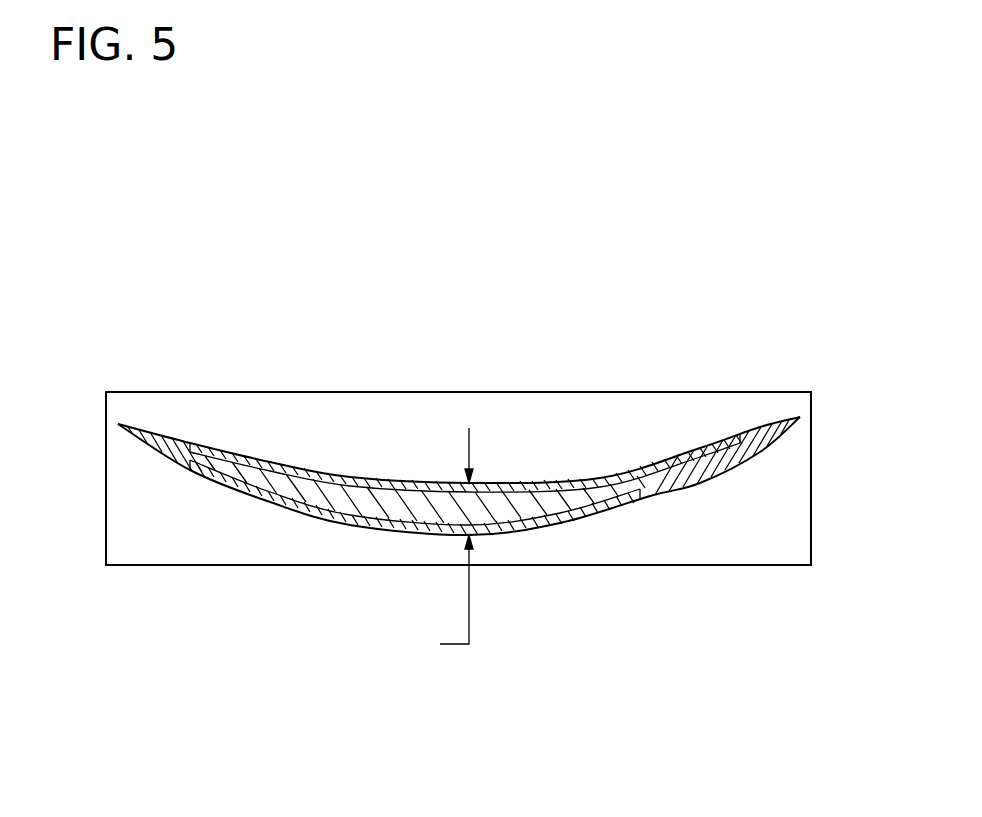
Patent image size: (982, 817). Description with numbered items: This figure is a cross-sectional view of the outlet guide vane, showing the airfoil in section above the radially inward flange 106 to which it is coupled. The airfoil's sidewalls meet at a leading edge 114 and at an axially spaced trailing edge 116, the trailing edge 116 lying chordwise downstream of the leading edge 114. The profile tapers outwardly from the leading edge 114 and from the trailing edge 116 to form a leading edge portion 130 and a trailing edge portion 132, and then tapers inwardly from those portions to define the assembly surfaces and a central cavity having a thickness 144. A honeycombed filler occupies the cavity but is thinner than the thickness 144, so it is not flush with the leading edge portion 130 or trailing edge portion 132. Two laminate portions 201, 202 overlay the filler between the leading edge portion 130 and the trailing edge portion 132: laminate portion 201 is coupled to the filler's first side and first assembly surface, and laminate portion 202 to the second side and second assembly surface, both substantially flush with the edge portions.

The radially inward flange 106 is at (200, 565).
The leading edge 114 is at (118, 424).
The trailing edge 116 is at (800, 417).
The leading edge portion 130 is at (148, 450).
The trailing edge portion 132 is at (713, 466).
The thickness of cavity 144 is at (430, 545).
The laminate portion 201 is at (603, 512).
The laminate portion 202 is at (313, 470).